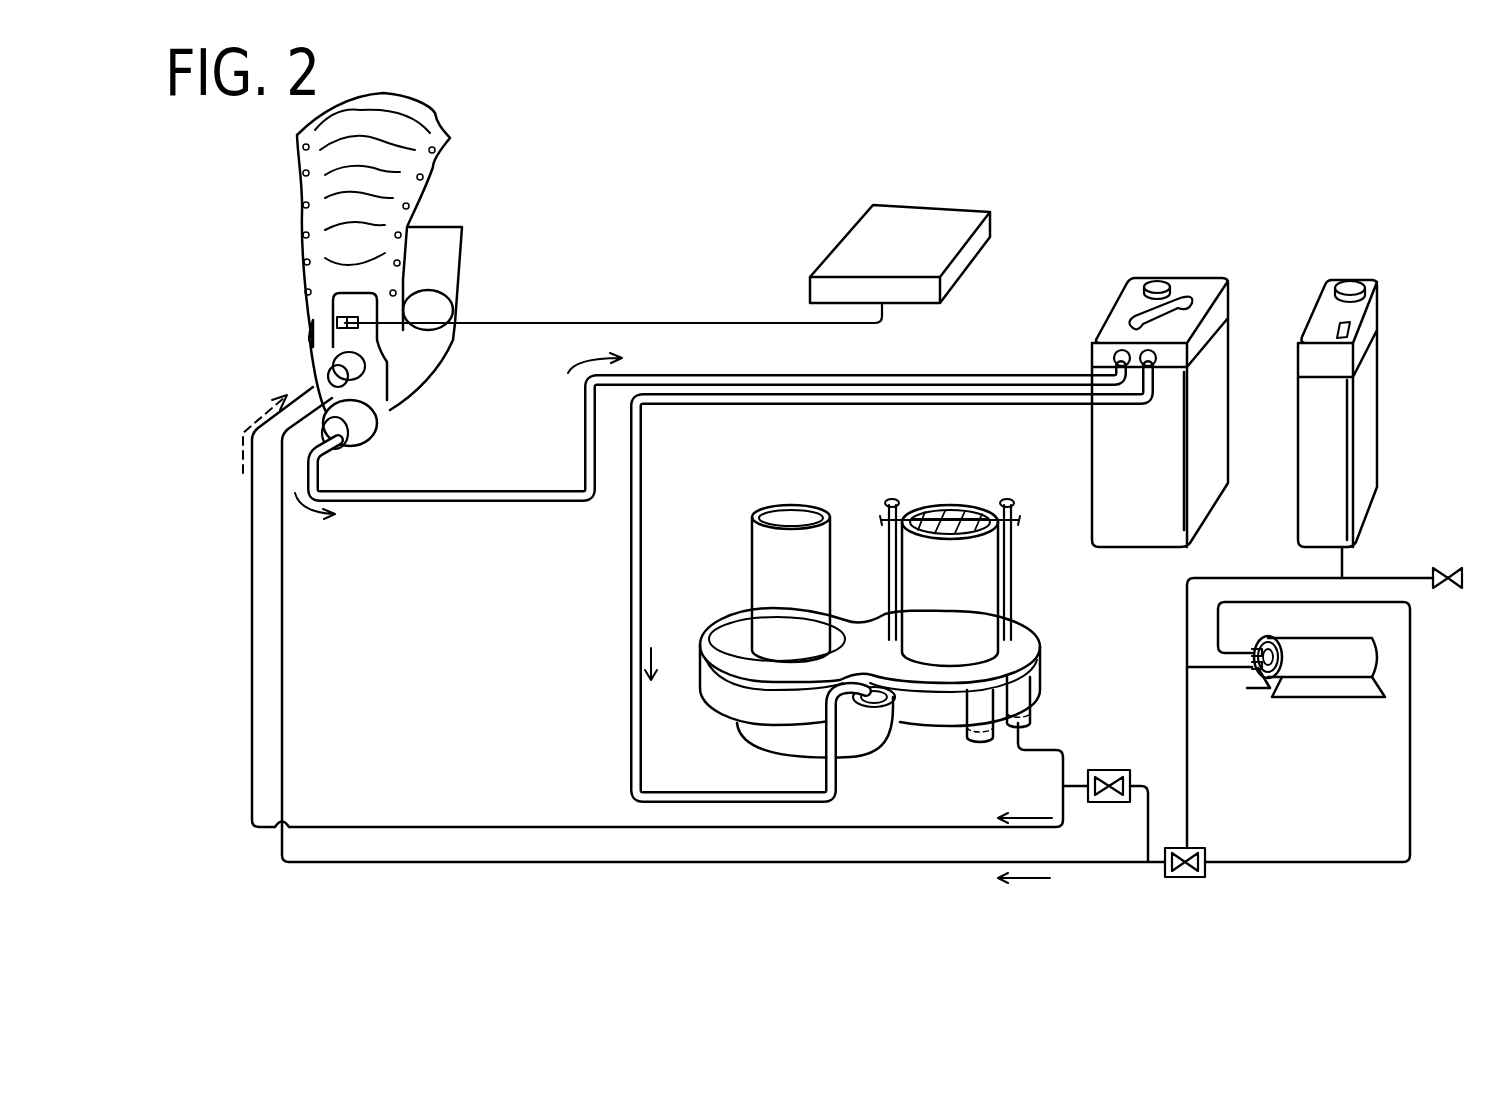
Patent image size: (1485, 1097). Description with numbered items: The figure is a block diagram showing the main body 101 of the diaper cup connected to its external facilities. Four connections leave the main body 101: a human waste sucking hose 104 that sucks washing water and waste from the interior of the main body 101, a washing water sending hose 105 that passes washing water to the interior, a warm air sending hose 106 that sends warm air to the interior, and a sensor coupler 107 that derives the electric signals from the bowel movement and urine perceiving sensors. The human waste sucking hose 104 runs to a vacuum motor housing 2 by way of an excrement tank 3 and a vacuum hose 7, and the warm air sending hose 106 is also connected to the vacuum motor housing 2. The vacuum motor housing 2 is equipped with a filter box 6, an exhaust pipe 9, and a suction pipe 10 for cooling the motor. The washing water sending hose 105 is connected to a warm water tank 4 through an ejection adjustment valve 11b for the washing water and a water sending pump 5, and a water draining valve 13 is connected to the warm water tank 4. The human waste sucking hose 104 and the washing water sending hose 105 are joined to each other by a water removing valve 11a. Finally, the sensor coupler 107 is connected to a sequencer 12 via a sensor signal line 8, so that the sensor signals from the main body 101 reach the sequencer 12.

The vacuum motor housing 2 is at (720, 615).
The excrement tank 3 is at (1180, 275).
The warm water tank 4 is at (1352, 278).
The water sending pump 5 is at (1330, 668).
The filter box 6 is at (955, 508).
The vacuum hose 7 is at (1032, 395).
The sensor signal line 8 is at (612, 322).
The exhaust pipe 9 is at (975, 740).
The suction pipe 10 is at (795, 520).
The water removing valve 11a is at (1120, 770).
The ejection adjustment valve 11b is at (1205, 848).
The sequencer 12 is at (920, 215).
The water draining valve 13 is at (1446, 574).
The main body 101 is at (445, 162).
The human waste sucking hose 104 is at (740, 375).
The washing water sending hose 105 is at (440, 866).
The warm air sending hose 106 is at (432, 827).
The sensor coupler 107 is at (332, 322).